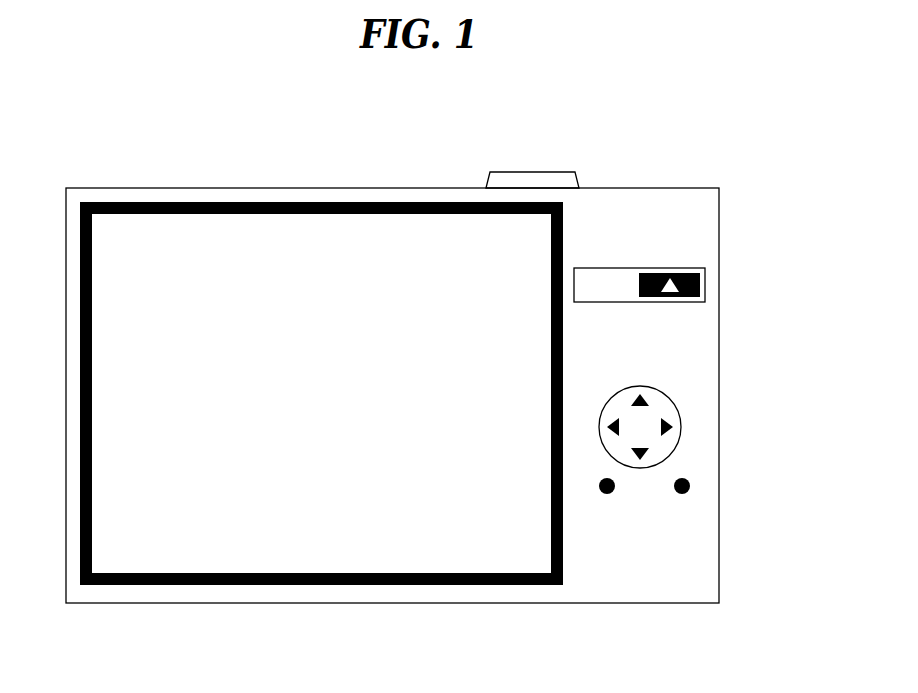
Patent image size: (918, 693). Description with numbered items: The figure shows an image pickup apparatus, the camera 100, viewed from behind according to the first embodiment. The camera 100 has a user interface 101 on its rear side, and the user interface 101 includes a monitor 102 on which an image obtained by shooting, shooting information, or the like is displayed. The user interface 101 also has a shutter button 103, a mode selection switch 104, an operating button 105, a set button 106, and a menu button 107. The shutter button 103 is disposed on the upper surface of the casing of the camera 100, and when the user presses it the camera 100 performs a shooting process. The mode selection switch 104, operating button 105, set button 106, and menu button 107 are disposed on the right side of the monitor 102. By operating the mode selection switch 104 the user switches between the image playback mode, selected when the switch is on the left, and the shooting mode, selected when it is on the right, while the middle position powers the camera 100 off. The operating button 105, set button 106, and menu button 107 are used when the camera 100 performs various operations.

The camera 100 is at (686, 97).
The user interface 101 is at (170, 562).
The monitor 102 is at (240, 223).
The shutter button 103 is at (545, 172).
The mode selection switch 104 is at (676, 287).
The operating button 105 is at (681, 422).
The set button 106 is at (613, 492).
The menu button 107 is at (690, 486).